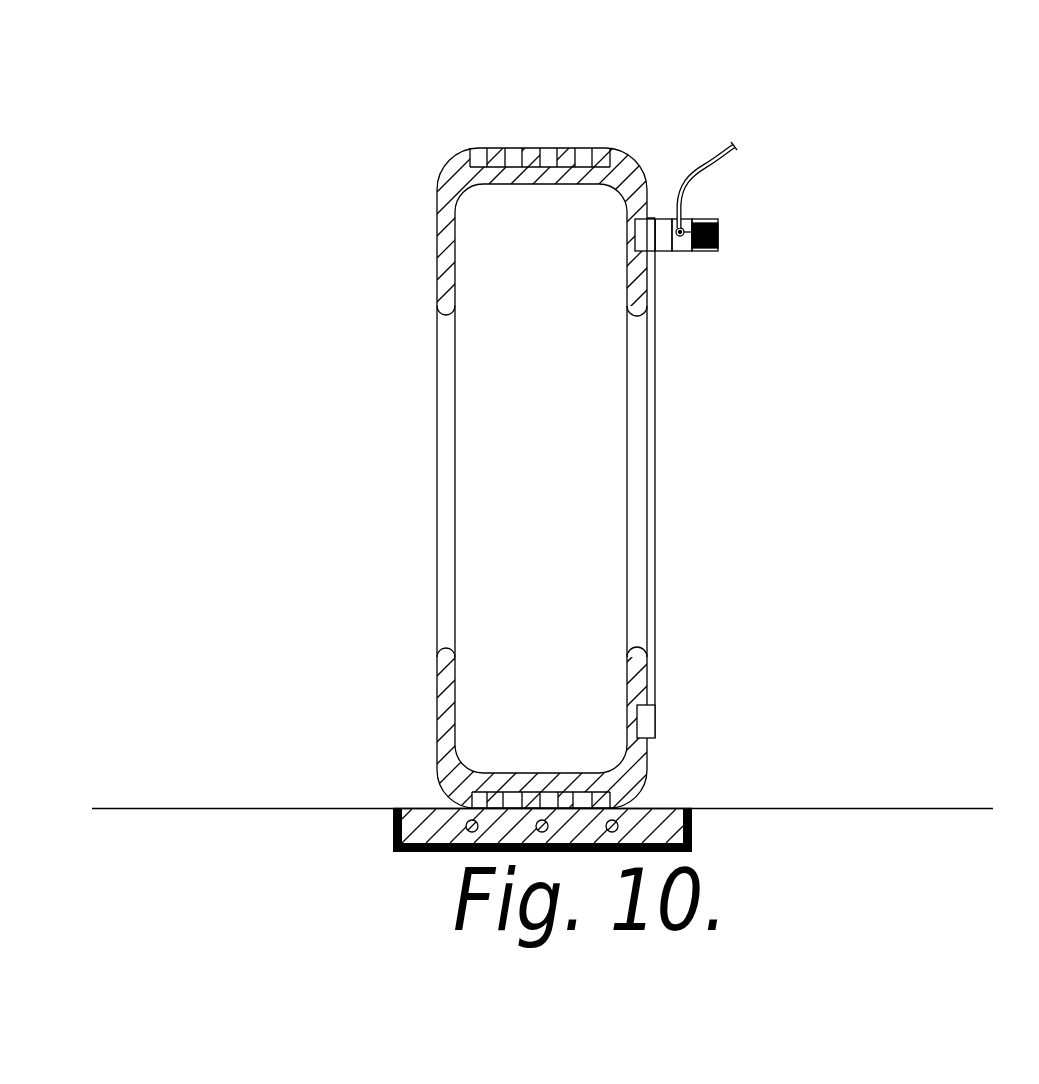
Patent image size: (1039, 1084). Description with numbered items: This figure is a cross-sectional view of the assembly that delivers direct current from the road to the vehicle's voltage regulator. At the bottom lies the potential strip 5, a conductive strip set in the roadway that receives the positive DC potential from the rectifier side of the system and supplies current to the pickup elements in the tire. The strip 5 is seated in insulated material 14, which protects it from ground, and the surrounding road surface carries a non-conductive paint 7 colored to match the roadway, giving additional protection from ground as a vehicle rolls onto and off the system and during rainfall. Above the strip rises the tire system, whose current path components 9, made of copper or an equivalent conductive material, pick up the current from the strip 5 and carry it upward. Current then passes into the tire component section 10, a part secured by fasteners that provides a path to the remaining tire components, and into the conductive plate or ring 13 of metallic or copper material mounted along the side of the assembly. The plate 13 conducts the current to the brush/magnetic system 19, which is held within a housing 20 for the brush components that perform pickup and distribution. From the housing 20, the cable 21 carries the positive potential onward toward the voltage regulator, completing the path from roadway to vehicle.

The potential strip 5 is at (660, 807).
The non-conductive paint 7 is at (190, 808).
The current path components 9 is at (540, 148).
The tire component section 10 is at (650, 710).
The conductive plate or ring 13 is at (656, 478).
The insulated material 14 is at (402, 808).
The brush/magnetic system 19 is at (668, 253).
The housing 20 is at (718, 236).
The cable 21 is at (722, 163).